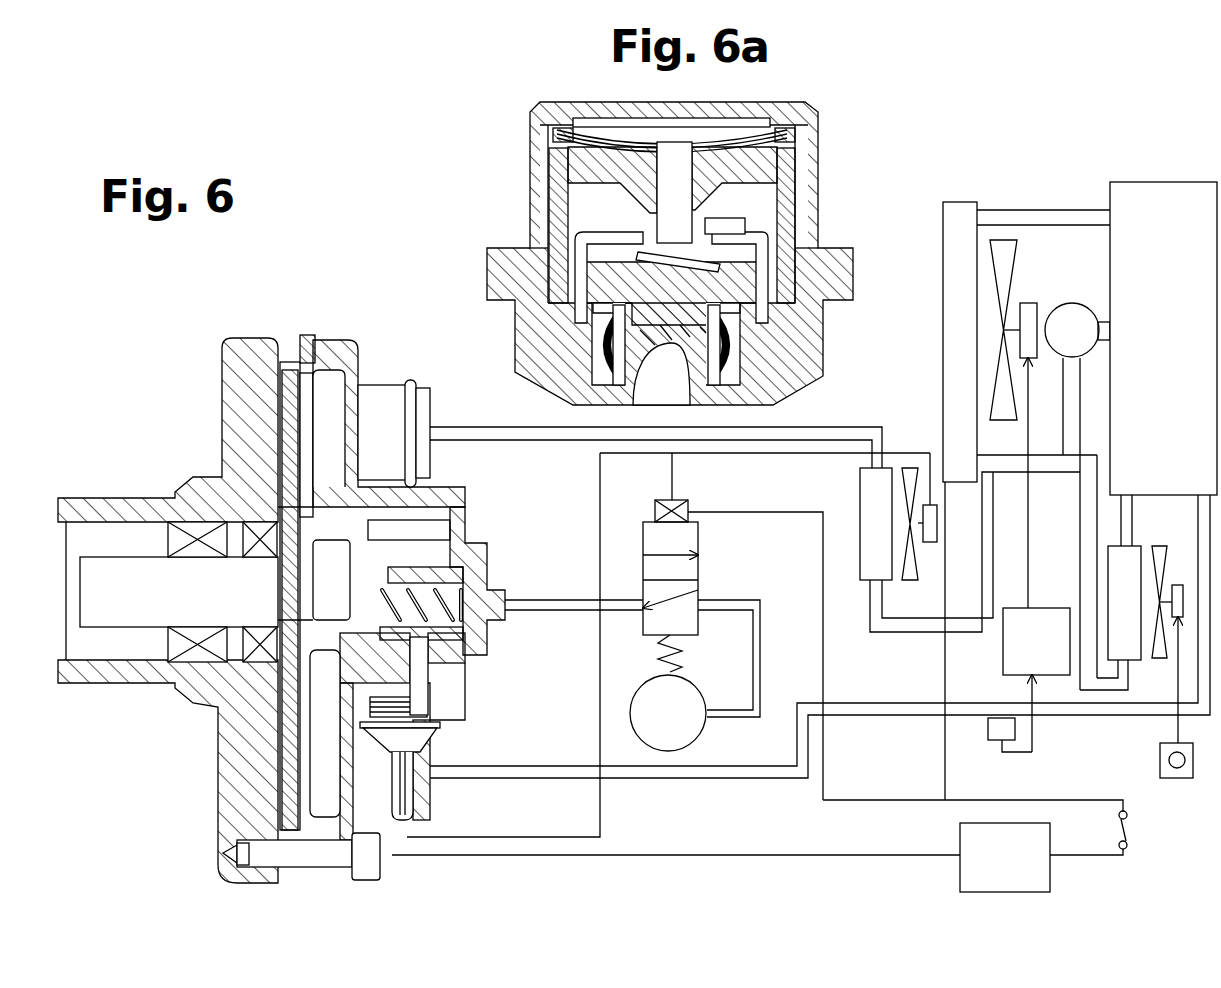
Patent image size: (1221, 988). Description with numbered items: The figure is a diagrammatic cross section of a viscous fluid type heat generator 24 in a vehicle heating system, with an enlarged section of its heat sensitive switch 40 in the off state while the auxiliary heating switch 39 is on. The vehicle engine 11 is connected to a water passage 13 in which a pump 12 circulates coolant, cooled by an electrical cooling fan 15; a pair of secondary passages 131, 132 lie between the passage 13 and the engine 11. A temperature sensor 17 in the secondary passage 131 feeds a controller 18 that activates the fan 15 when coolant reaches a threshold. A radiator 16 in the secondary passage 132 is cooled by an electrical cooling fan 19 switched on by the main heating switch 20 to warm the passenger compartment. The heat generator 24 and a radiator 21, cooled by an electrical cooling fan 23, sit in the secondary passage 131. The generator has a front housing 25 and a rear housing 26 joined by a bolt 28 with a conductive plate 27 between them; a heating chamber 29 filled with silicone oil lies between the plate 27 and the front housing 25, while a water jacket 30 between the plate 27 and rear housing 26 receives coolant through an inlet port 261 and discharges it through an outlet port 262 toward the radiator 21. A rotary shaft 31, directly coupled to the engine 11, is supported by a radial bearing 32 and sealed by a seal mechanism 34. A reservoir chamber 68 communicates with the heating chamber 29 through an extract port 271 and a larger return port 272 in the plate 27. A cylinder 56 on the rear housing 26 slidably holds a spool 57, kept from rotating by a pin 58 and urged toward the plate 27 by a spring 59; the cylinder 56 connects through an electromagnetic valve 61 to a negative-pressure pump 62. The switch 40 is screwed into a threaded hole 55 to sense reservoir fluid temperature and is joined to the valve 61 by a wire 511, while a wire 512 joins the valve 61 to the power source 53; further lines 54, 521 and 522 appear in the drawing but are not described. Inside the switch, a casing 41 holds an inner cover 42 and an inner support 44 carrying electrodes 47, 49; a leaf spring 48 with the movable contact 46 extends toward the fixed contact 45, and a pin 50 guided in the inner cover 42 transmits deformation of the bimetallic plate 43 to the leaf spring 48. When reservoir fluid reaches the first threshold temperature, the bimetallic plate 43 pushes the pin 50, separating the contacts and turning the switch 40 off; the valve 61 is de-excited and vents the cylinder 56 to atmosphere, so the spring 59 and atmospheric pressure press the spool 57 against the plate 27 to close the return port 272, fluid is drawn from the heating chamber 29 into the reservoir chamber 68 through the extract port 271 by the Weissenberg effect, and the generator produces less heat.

In FIG. 6, the vehicle engine 11 is at (1155, 182).
In FIG. 6, the pump 12 is at (1080, 303).
In FIG. 6, the water passage 13 is at (1042, 208).
In FIG. 6, the electrical cooling fan 15 is at (1012, 252).
In FIG. 6, the radiator 16 is at (1125, 548).
In FIG. 6, the temperature sensor 17 is at (988, 730).
In FIG. 6, the controller 18 is at (1042, 608).
In FIG. 6, the electrical cooling fan 19 is at (1158, 658).
In FIG. 6, the main heating switch 20 is at (1177, 778).
In FIG. 6, the radiator 21 is at (860, 488).
In FIG. 6, the electrical cooling fan 23 is at (910, 468).
In FIG. 6, the heat generator 24 is at (410, 290).
In FIG. 6, the front housing 25 is at (255, 345).
In FIG. 6, the rear housing 26 is at (340, 338).
In FIG. 6, the plate 27 is at (308, 335).
In FIG. 6, the bolt 28 is at (382, 860).
In FIG. 6, the heating chamber 29 is at (288, 350).
In FIG. 6, the water jacket 30 is at (330, 770).
In FIG. 6, the rotary shaft 31 is at (118, 605).
In FIG. 6, the radial bearing 32 is at (268, 522).
In FIG. 6, the seal mechanism 34 is at (268, 662).
In FIG. 6, the auxiliary heating switch 39 is at (1130, 838).
In FIG. 6a, the heat sensitive switch 40 is at (438, 167).
In FIG. 6, the heat sensitive switch 40 is at (435, 738).
In FIG. 6a, the casing 41 is at (500, 255).
In FIG. 6a, the inner cover 42 is at (558, 158).
In FIG. 6a, the bimetallic plate 43 is at (790, 138).
In FIG. 6a, the inner support 44 is at (786, 225).
In FIG. 6a, the fixed contact 45 is at (728, 218).
In FIG. 6a, the movable contact 46 is at (712, 296).
In FIG. 6a, the electrode 47 is at (785, 290).
In FIG. 6a, the leaf spring 48 is at (655, 262).
In FIG. 6a, the electrode 49 is at (592, 235).
In FIG. 6a, the pin 50 is at (658, 150).
In FIG. 6, the power source 53 is at (1052, 875).
In FIG. 6, the ground line 54 is at (700, 855).
In FIG. 6, the threaded hole 55 is at (432, 712).
In FIG. 6, the cylinder 56 is at (478, 575).
In FIG. 6, the spool 57 is at (400, 660).
In FIG. 6, the pin 58 is at (405, 520).
In FIG. 6, the spring 59 is at (330, 597).
In FIG. 6, the electromagnetic valve 61 is at (698, 568).
In FIG. 6, the pump 62 is at (690, 735).
In FIG. 6, the reservoir chamber 68 is at (340, 487).
In FIG. 6, the secondary passage 131 is at (915, 632).
In FIG. 6, the secondary passage 132 is at (1110, 690).
In FIG. 6, the inlet port 261 is at (420, 802).
In FIG. 6, the outlet port 262 is at (384, 385).
In FIG. 6, the extract port 271 is at (272, 578).
In FIG. 6, the return port 272 is at (272, 612).
In FIG. 6, the wire 511 is at (672, 478).
In FIG. 6, the wire 512 is at (825, 766).
In FIG. 6, the refrigerant line 521 is at (885, 455).
In FIG. 6, the refrigerant line 522 is at (945, 687).